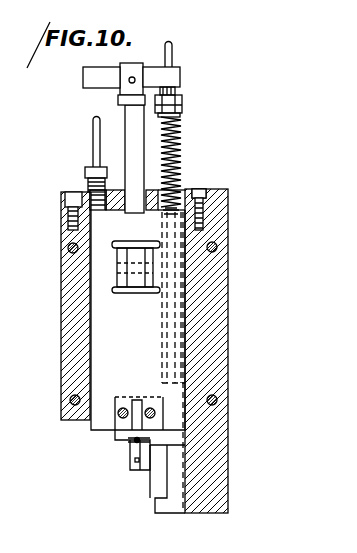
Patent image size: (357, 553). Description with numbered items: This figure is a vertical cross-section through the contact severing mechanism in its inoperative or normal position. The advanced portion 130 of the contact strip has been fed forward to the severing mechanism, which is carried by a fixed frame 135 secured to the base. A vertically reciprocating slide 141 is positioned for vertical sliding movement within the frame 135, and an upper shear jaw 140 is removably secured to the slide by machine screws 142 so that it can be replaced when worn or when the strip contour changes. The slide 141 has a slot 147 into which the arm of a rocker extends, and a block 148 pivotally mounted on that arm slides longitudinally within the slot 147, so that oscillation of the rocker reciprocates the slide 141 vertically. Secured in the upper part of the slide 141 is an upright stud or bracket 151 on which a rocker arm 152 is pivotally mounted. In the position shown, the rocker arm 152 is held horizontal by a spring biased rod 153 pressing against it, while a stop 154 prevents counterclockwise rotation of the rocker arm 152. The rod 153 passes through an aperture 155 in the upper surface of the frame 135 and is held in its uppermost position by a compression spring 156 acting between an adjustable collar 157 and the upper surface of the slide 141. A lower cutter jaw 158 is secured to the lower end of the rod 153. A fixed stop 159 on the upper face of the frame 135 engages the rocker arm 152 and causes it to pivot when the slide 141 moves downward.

The advanced portion of the strip 130 is at (130, 448).
The frame 135 is at (215, 337).
The upper shear jaw 140 is at (120, 435).
The vertically reciprocating slide 141 is at (103, 347).
The machine screws 142 is at (155, 400).
The slot 147 is at (128, 237).
The block 148 is at (137, 283).
The upright stud or bracket 151 is at (128, 115).
The rocker arm 152 is at (170, 75).
The spring biased rod 153 is at (179, 127).
The stop 154 is at (173, 55).
The aperture 155 is at (197, 189).
The compression spring 156 is at (182, 153).
The adjustable collar 157 is at (182, 102).
The lower cutter jaw 158 is at (152, 452).
The fixed stop 159 is at (97, 142).